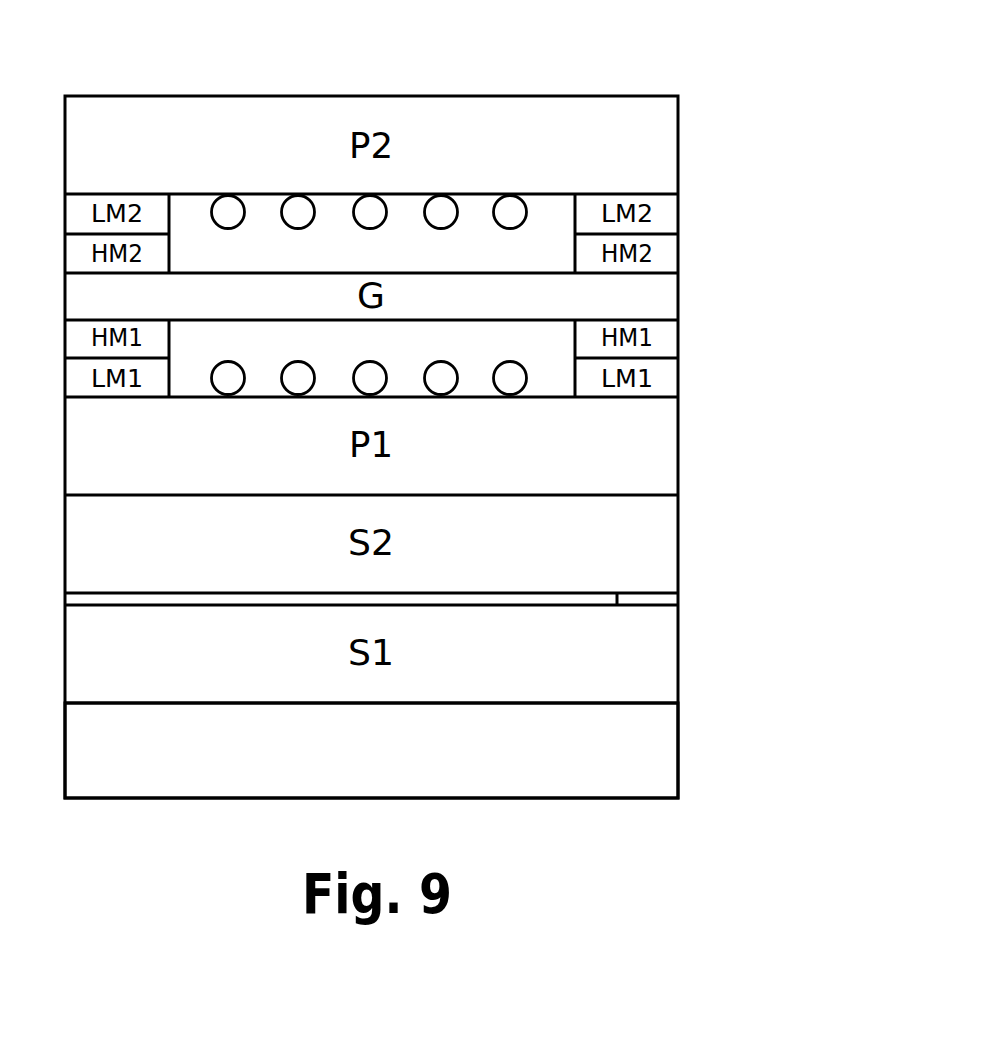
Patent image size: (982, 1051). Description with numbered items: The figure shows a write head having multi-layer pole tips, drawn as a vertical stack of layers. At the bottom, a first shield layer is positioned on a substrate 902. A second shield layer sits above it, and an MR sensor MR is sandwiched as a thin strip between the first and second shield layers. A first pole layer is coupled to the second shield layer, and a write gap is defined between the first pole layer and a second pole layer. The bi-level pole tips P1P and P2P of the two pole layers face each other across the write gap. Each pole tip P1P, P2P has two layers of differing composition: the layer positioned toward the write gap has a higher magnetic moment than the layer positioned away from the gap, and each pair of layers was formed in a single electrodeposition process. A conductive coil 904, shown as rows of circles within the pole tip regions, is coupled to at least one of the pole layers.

The conductive coil 904 is at (527, 198).
The substrate 902 is at (678, 748).
The second pole tip P2P is at (743, 255).
The first pole tip P1P is at (733, 358).
The MR sensor MR is at (678, 600).